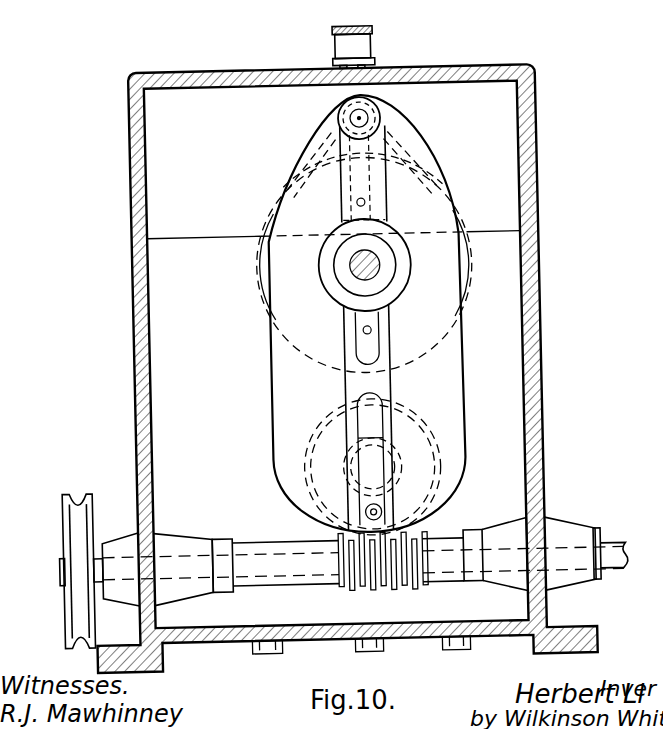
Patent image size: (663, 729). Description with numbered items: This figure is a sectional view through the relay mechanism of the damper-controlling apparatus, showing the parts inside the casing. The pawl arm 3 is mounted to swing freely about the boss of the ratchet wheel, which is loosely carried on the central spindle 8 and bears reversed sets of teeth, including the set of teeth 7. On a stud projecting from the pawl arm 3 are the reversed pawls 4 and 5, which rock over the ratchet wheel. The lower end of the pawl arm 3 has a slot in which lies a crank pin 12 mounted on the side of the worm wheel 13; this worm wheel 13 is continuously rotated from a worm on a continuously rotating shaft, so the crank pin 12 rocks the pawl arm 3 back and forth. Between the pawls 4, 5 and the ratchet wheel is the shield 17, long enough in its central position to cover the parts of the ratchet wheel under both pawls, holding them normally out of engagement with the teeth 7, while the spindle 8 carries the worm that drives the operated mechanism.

The pawl arm 3 is at (463, 363).
The pawl 4 is at (401, 126).
The pawl 5 is at (321, 138).
The set of teeth 7 is at (477, 257).
The central spindle 8 is at (383, 265).
The crank pin 12 is at (378, 509).
The worm wheel 13 is at (431, 434).
The shield 17 is at (403, 148).